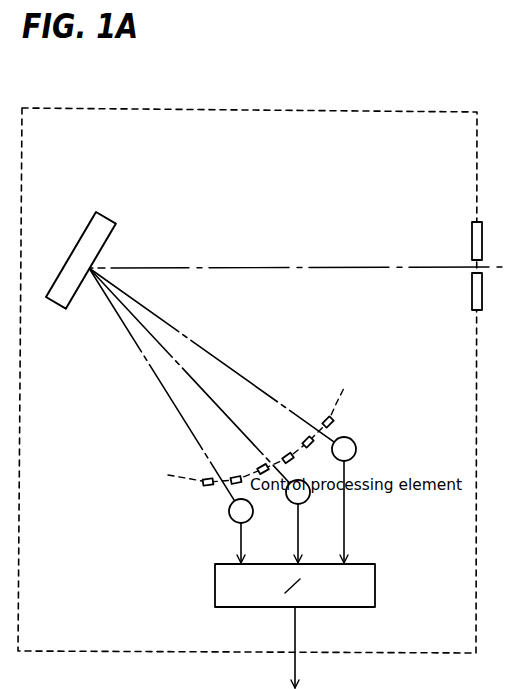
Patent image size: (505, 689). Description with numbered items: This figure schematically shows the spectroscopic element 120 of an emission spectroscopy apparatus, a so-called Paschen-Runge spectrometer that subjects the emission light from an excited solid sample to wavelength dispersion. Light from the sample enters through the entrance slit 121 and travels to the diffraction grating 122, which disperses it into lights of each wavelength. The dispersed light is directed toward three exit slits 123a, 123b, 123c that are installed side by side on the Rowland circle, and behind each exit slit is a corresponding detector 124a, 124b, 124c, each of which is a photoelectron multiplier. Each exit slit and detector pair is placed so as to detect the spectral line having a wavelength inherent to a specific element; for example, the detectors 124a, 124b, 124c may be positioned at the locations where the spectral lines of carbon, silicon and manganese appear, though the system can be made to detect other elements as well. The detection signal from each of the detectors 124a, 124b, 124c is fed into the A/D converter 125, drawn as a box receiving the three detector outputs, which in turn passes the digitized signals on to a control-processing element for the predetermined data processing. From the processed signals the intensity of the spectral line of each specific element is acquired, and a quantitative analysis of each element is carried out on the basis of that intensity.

The spectroscopic element 120 is at (128, 81).
The entrance slit 121 is at (472, 266).
The diffraction grating 122 is at (85, 226).
The exit slit 123a is at (200, 487).
The exit slit 123b is at (342, 403).
The exit slit 123c is at (334, 419).
The detector 124a is at (230, 521).
The detector 124b is at (311, 502).
The detector 124c is at (355, 456).
The A/D converter 125 is at (377, 588).